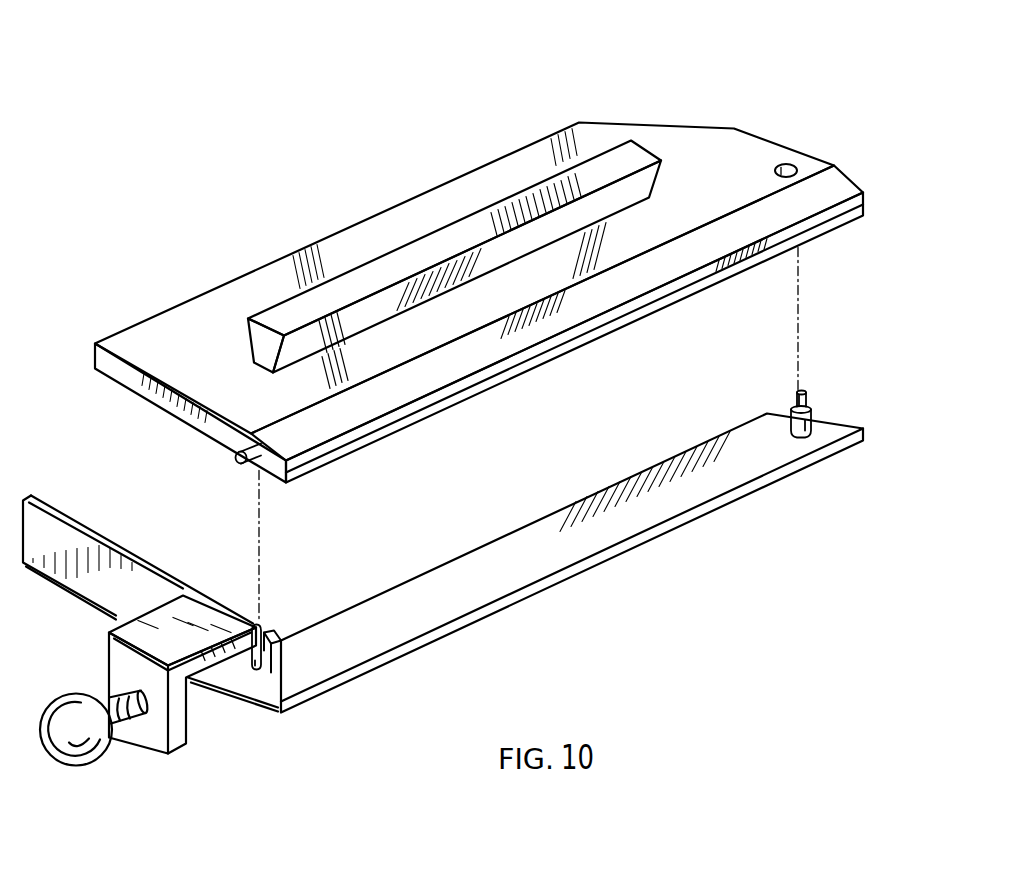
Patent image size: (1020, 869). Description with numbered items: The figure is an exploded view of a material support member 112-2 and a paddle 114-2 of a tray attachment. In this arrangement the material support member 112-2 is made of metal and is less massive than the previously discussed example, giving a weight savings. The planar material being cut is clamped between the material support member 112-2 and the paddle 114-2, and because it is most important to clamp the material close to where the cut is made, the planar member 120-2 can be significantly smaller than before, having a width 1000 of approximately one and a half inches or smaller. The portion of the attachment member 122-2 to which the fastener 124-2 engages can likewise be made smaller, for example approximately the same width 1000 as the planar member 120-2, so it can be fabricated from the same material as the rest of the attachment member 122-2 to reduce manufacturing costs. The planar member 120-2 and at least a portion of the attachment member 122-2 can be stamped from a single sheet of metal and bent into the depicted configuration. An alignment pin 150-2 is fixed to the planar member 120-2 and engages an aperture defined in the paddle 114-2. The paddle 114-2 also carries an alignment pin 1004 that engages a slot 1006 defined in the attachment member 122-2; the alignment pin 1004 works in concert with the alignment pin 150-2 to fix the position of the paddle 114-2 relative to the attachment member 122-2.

The paddle 114-2 is at (662, 134).
The alignment pin 150-2 is at (788, 163).
The width 1000 is at (927, 436).
The alignment pin 1004 is at (225, 443).
The planar member 120-2 is at (612, 528).
The attachment member 122-2 is at (264, 680).
The slot 1006 is at (256, 668).
The fastener 124-2 is at (78, 763).
The material support member 112-2 is at (358, 704).